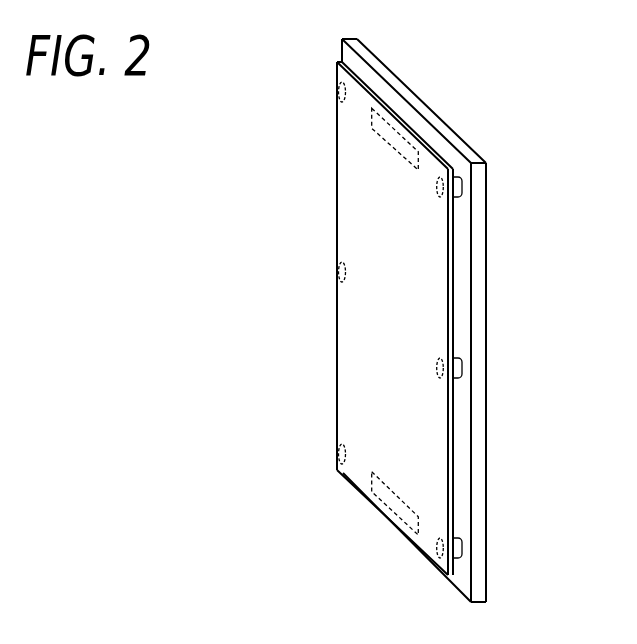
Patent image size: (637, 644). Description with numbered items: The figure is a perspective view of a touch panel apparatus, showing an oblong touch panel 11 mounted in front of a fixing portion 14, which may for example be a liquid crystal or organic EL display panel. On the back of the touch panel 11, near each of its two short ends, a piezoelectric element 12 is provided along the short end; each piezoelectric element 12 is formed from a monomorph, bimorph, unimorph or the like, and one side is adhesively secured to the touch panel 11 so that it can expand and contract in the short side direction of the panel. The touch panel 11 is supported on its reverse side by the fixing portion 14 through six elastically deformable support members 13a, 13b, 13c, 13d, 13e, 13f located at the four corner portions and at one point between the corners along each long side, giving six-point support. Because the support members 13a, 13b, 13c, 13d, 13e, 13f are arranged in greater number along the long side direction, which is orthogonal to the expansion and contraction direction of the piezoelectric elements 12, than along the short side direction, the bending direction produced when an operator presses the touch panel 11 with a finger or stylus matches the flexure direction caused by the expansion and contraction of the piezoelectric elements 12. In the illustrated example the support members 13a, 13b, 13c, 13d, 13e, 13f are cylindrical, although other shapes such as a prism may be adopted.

The touch panel 11 is at (365, 326).
The piezoelectric element 12 is at (396, 130).
The support member 13a is at (337, 90).
The support member 13b is at (337, 451).
The support member 13c is at (462, 548).
The support member 13d is at (462, 187).
The support member 13e is at (337, 267).
The support member 13f is at (462, 368).
The fixing portion 14 is at (486, 290).